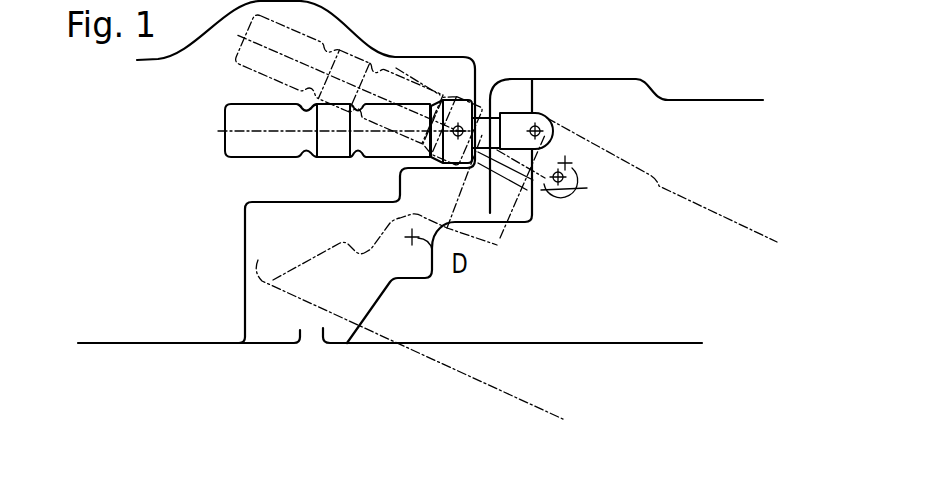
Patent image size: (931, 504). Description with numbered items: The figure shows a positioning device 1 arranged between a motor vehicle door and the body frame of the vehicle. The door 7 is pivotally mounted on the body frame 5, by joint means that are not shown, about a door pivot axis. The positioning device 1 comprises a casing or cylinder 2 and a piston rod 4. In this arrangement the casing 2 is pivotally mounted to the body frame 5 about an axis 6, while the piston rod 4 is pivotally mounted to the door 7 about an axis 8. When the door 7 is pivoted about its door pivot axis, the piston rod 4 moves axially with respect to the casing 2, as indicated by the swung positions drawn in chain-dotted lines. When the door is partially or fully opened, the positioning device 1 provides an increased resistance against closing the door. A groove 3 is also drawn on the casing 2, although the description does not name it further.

The positioning device 1 is at (334, 105).
The casing 2 is at (240, 143).
The annular groove 3 is at (308, 158).
The piston rod 4 is at (499, 115).
The body frame 5 is at (197, 344).
The axis 6 is at (455, 97).
The door 7 is at (633, 345).
The axis 8 is at (540, 113).